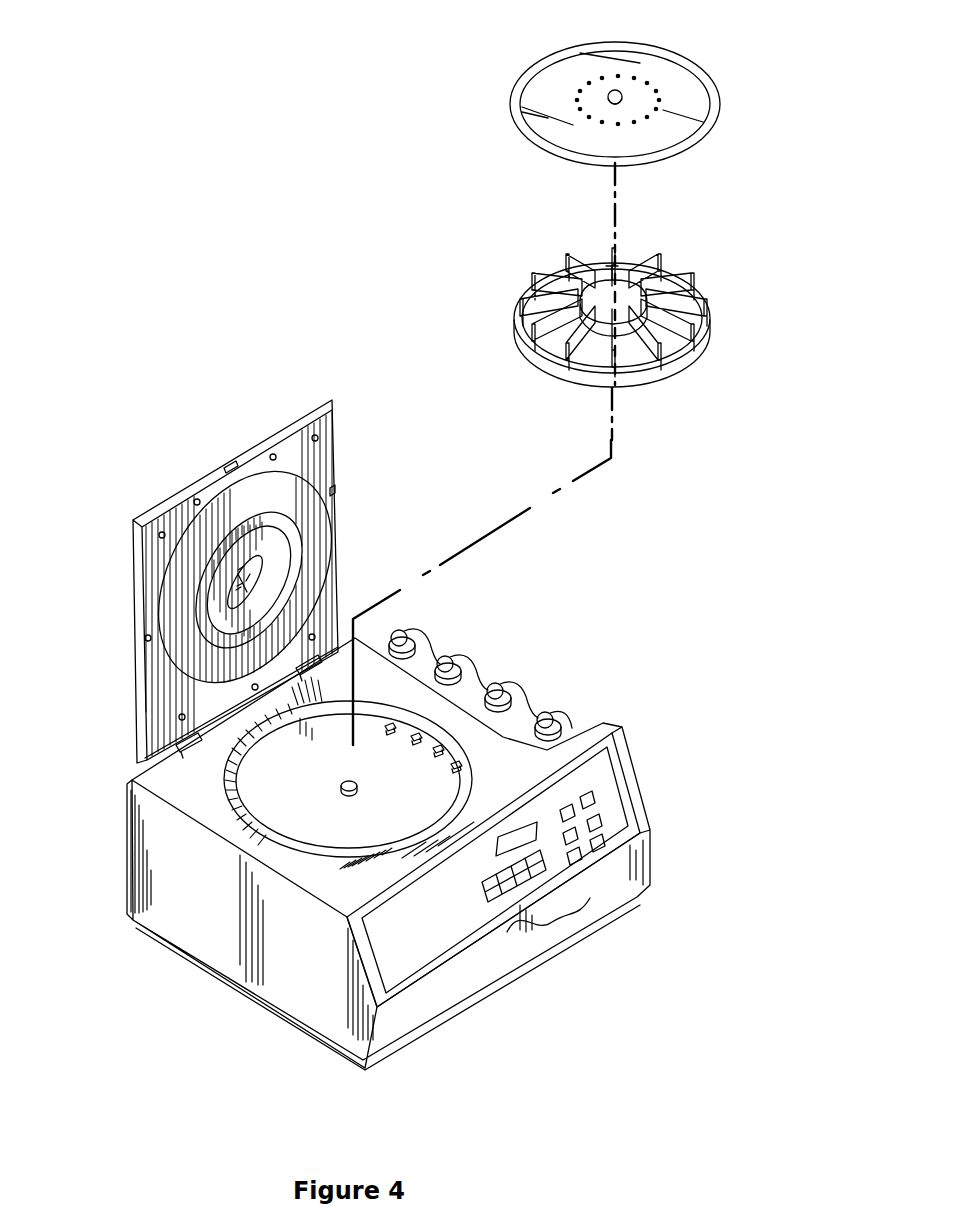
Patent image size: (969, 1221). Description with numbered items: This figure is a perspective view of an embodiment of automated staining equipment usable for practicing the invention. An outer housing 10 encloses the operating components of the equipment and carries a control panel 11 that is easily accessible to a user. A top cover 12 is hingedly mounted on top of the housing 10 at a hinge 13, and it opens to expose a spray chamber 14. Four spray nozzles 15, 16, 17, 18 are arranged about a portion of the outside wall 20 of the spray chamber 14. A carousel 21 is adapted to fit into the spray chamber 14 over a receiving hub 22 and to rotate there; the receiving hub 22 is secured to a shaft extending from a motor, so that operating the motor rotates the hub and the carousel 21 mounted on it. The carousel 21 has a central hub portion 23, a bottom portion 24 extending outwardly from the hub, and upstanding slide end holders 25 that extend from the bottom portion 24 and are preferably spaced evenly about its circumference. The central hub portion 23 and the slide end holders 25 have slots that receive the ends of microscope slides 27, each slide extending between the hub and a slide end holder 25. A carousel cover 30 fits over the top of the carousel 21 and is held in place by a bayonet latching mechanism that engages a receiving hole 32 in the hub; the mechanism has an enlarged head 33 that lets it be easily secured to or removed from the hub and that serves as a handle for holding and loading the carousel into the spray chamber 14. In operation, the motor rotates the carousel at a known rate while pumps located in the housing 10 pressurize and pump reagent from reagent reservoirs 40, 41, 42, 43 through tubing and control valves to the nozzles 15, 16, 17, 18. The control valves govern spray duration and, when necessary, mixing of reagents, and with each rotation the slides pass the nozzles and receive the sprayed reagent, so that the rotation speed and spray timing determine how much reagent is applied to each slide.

The outer housing 10 is at (180, 945).
The control panel 11 is at (587, 931).
The top cover 12 is at (275, 432).
The hinge 13 is at (295, 668).
The spray chamber 14 is at (271, 785).
The spray nozzle 15 is at (415, 744).
The spray nozzle 16 is at (437, 757).
The spray nozzle 17 is at (452, 772).
The spray nozzle 18 is at (389, 734).
The outside wall 20 is at (228, 772).
The carousel 21 is at (591, 318).
The receiving hub 22 is at (345, 790).
The central hub portion 23 is at (583, 303).
The bottom portion 24 is at (627, 382).
The slide end holders 25 is at (712, 335).
The microscope slides 27 is at (685, 300).
The carousel cover 30 is at (688, 76).
The receiving hole 32 is at (577, 386).
The enlarged head 33 is at (618, 93).
The reagent reservoir 40 is at (562, 725).
The reagent reservoir 41 is at (520, 688).
The reagent reservoir 42 is at (458, 668).
The reagent reservoir 43 is at (412, 642).